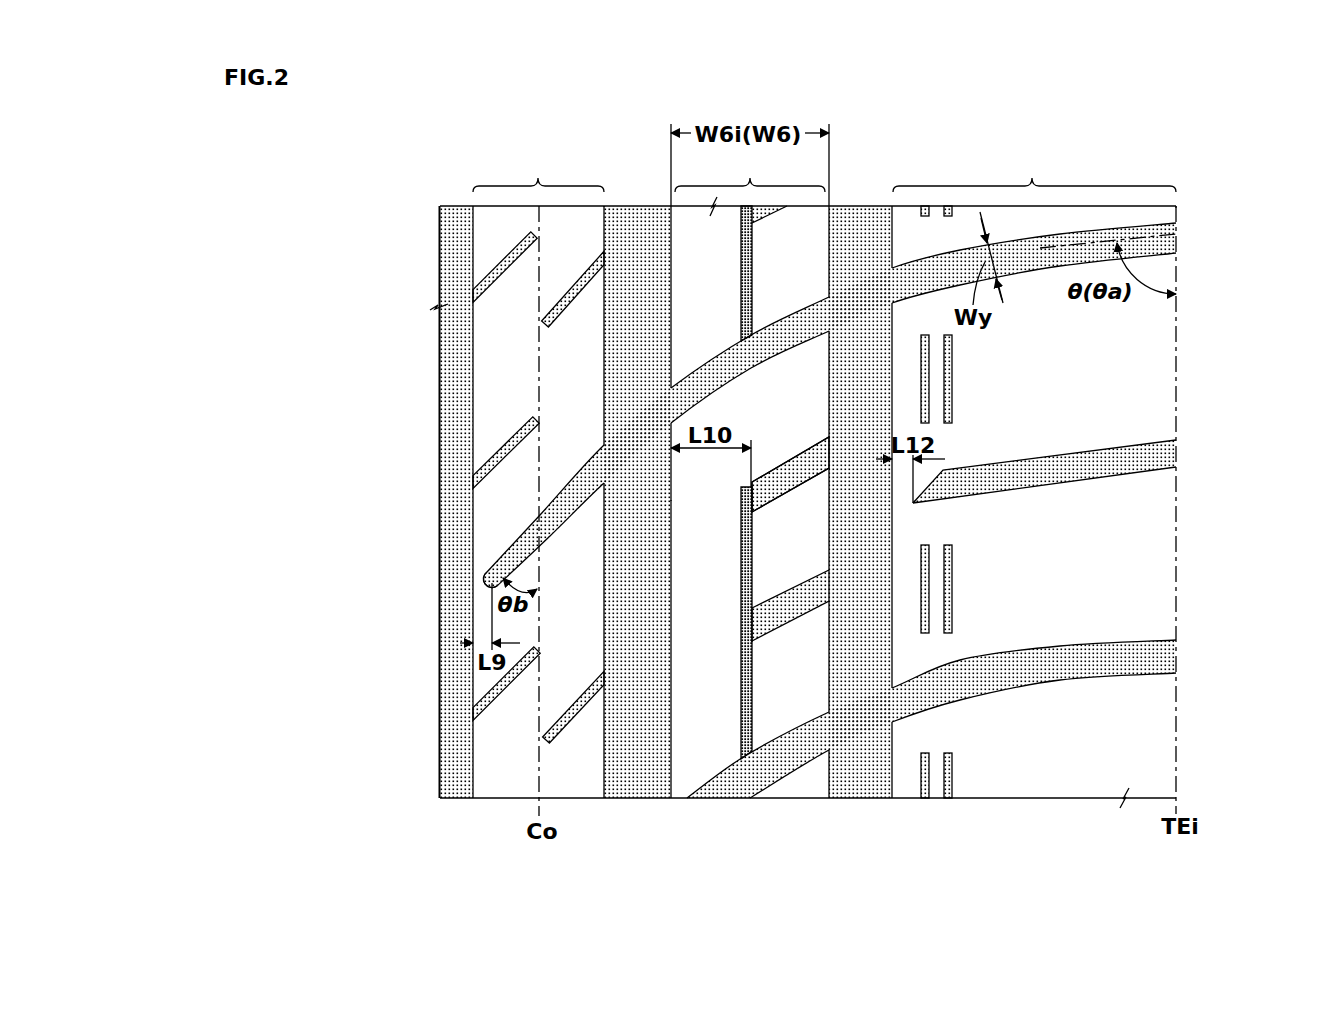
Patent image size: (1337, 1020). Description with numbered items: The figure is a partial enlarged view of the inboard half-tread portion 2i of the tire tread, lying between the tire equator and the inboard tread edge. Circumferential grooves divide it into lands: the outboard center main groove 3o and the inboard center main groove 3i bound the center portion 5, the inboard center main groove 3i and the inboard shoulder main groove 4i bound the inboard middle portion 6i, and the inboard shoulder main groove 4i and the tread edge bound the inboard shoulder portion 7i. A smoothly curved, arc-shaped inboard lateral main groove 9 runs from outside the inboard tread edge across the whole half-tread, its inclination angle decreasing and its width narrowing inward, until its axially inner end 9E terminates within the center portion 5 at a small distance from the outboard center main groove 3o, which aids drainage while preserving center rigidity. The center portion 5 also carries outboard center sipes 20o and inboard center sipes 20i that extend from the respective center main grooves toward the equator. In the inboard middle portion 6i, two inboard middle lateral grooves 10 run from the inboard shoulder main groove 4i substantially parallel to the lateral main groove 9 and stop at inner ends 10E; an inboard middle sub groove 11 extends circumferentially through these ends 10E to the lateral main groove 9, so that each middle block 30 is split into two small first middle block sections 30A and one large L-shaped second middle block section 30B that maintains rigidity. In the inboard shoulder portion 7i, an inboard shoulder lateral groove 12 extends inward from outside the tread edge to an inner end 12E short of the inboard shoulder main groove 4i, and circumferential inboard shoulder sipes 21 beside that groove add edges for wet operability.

The inboard half-tread portion 2i is at (1207, 183).
The outboard center main groove 3o is at (460, 222).
The inboard center main groove 3i is at (640, 218).
The inboard shoulder main groove 4i is at (861, 218).
The center portion 5 is at (538, 173).
The inboard middle portion 6i is at (750, 173).
The inboard shoulder portion 7i is at (1034, 172).
The inboard lateral main groove 9 is at (1140, 247).
The axially inner end of inboard lateral main groove 9E is at (483, 575).
The inboard middle lateral groove 10 is at (773, 488).
The axially inner end of inboard middle lateral groove 10E is at (758, 656).
The inboard middle sub groove 11 is at (740, 687).
The inboard shoulder lateral groove 12 is at (1077, 462).
The axially inner end of inboard shoulder lateral groove 12E is at (960, 450).
The outboard center sipe 20o is at (505, 441).
The inboard center sipe 20i is at (570, 720).
The inboard shoulder sipe 21 is at (920, 770).
The middle block 30 is at (667, 723).
The first middle block section 30A is at (776, 550).
The second middle block section 30B is at (686, 588).